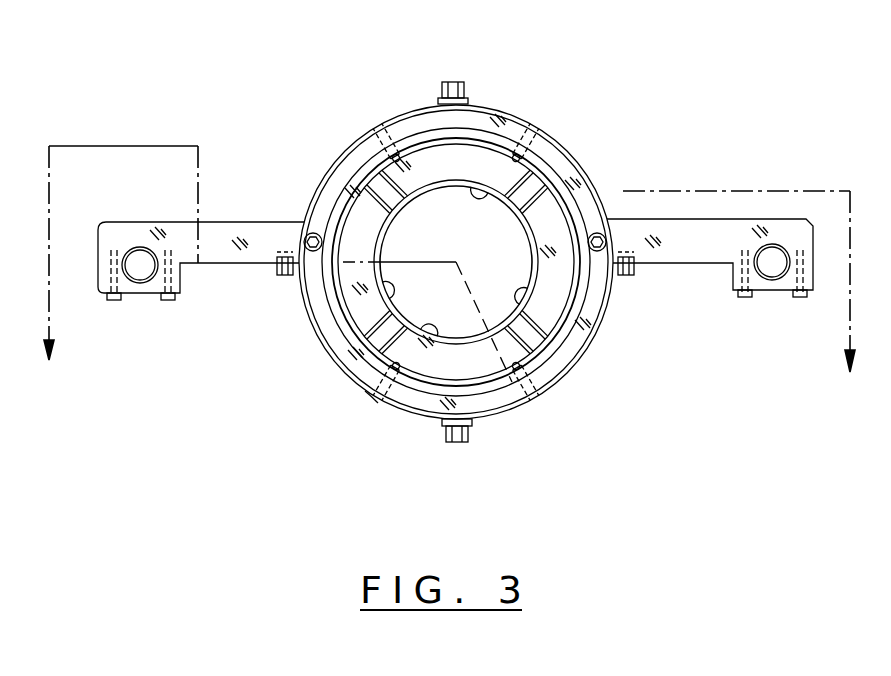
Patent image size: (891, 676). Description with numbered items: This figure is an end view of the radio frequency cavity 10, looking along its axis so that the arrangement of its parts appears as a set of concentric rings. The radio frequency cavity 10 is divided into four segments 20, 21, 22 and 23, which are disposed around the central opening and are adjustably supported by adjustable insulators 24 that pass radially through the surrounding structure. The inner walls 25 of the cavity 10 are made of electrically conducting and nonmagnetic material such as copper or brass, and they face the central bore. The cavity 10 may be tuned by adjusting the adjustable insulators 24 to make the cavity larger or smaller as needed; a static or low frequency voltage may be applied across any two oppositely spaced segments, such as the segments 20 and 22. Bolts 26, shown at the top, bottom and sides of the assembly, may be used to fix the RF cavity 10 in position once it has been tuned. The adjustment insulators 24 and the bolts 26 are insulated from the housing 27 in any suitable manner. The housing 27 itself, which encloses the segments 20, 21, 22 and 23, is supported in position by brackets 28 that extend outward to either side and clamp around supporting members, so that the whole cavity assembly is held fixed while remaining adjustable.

The radio frequency cavity 10 is at (583, 86).
The segment 20 is at (350, 294).
The segment 21 is at (467, 357).
The segment 22 is at (552, 276).
The segment 23 is at (443, 160).
The adjustable insulators 24 is at (386, 140).
The inner walls 25 is at (468, 177).
The bolts 26 is at (464, 88).
The housing 27 is at (393, 407).
The brackets 28 is at (150, 297).